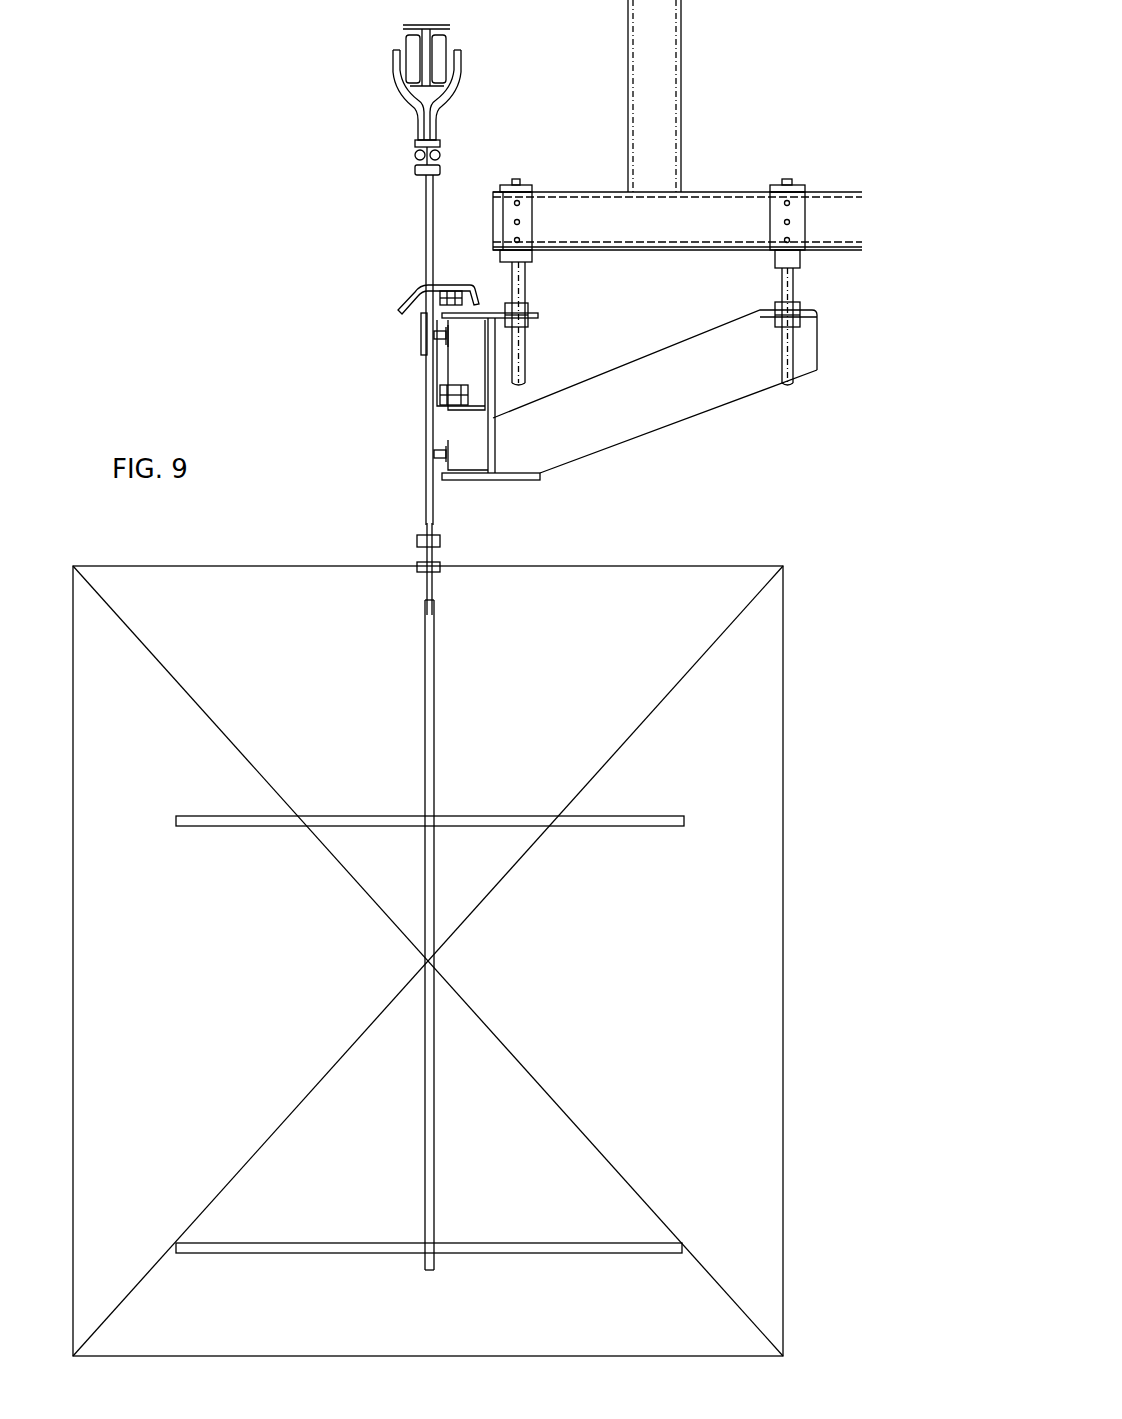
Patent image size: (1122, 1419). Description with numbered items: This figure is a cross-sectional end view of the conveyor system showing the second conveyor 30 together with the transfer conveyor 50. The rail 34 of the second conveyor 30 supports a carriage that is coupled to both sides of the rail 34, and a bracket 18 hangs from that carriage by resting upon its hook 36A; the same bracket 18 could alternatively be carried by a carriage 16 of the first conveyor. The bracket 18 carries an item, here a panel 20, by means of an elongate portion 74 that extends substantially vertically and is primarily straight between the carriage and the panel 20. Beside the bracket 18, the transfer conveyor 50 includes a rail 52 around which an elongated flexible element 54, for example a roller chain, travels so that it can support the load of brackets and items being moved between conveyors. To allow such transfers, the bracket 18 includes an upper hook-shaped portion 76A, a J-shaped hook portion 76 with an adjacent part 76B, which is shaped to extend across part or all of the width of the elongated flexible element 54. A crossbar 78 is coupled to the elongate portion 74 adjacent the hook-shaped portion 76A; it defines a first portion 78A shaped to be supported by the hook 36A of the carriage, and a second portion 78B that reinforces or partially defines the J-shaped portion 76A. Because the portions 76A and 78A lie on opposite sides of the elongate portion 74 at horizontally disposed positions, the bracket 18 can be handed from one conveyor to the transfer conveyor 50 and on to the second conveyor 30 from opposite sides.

The carriage 16 is at (383, 165).
The bracket 18 is at (357, 368).
The panel 20 is at (638, 578).
The second conveyor 30 is at (348, 50).
The rail 34 is at (437, 25).
The hook 36A is at (418, 345).
The transfer conveyor 50 is at (615, 335).
The rail 52 is at (500, 476).
The elongated flexible element 54 is at (455, 384).
The elongate portion 74 is at (430, 500).
The hanger bolt assembly 76 is at (492, 292).
The upper hook-shaped portion 76A is at (464, 285).
The second hanger bolt 76B is at (490, 300).
The crossbar 78 is at (413, 254).
The first portion 78A is at (400, 290).
The second portion 78B is at (445, 284).